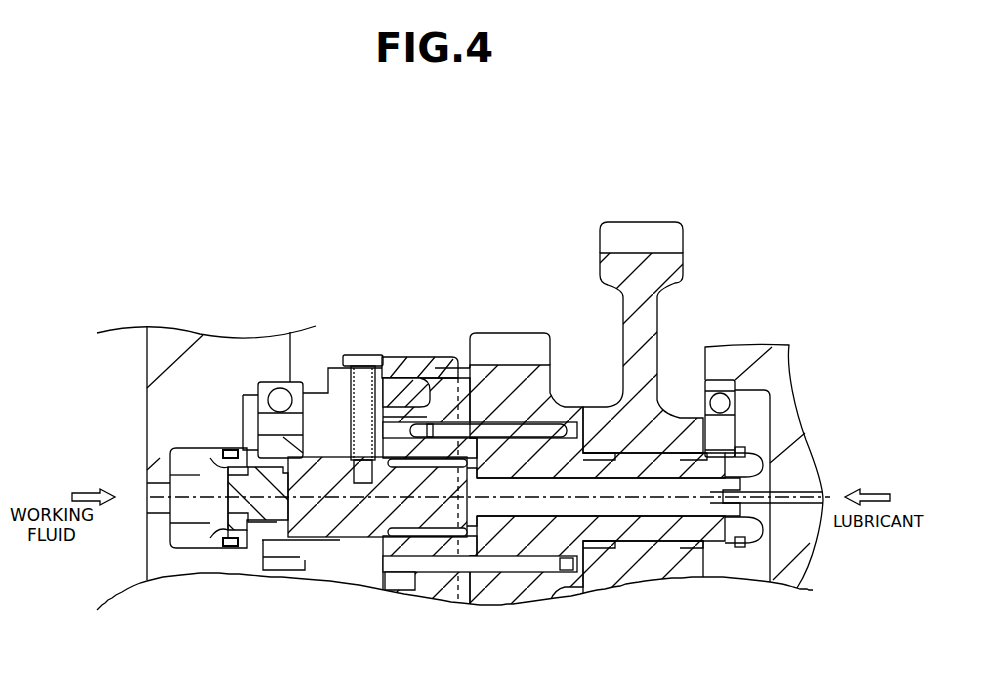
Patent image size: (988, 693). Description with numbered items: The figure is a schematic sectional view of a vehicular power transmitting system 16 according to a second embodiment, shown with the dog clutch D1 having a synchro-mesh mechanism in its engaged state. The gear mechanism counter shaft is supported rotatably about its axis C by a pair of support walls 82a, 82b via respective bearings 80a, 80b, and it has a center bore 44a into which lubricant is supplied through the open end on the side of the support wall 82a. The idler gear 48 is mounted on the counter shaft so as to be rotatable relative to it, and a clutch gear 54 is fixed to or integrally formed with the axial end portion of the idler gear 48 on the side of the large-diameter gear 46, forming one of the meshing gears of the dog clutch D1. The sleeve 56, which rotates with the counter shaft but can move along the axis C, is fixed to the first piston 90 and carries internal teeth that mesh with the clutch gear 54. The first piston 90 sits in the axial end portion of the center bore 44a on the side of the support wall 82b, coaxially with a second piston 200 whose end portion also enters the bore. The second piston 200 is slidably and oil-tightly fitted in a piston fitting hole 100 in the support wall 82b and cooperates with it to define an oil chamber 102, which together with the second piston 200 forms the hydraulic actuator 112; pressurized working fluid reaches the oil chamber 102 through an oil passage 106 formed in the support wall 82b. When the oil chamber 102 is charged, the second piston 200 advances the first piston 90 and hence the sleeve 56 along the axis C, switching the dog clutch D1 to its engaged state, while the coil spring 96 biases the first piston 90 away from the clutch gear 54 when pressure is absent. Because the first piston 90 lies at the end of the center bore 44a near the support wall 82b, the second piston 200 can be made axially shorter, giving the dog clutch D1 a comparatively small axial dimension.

The power transmitting system 16 is at (434, 156).
The large-diameter gear 46 is at (663, 232).
The idler gear 48 is at (533, 340).
The clutch gear 54 is at (450, 393).
The sleeve 56 is at (400, 363).
The bearing 80a is at (723, 388).
The bearing 80b is at (267, 383).
The support wall 82a is at (780, 350).
The support wall 82b is at (170, 343).
The first piston 90 is at (366, 552).
The coil spring 96 is at (423, 540).
The piston fitting hole 100 is at (189, 482).
The oil chamber 102 is at (178, 532).
The oil passage 106 is at (148, 484).
The hydraulic actuator 112 is at (163, 483).
The second piston 200 is at (215, 518).
The center bore 44a is at (276, 530).
The dog clutch D1 is at (338, 314).
The axis C is at (822, 492).